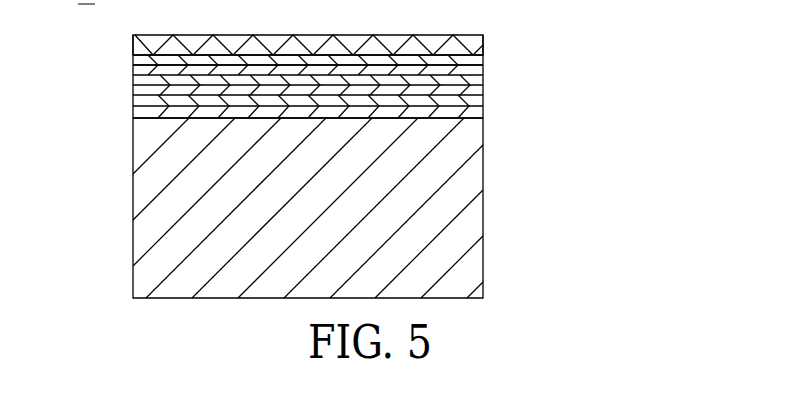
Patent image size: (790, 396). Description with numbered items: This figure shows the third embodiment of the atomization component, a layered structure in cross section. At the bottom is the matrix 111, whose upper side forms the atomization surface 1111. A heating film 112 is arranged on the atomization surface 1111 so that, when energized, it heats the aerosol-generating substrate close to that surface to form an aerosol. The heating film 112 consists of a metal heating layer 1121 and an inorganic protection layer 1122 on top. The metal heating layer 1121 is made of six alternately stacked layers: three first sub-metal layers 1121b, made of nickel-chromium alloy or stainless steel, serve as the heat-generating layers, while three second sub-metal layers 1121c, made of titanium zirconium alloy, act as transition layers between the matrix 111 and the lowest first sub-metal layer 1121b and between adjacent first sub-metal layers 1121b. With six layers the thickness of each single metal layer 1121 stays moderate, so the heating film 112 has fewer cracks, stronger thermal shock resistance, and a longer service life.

The matrix 111 is at (422, 228).
The atomization surface 1111 is at (185, 118).
The heating film 112 is at (431, 79).
The metal heating layer 1121 is at (401, 92).
The first sub-metal layer 1121b is at (483, 57).
The second sub-metal layer 1121c is at (483, 66).
The inorganic protection layer 1122 is at (483, 35).